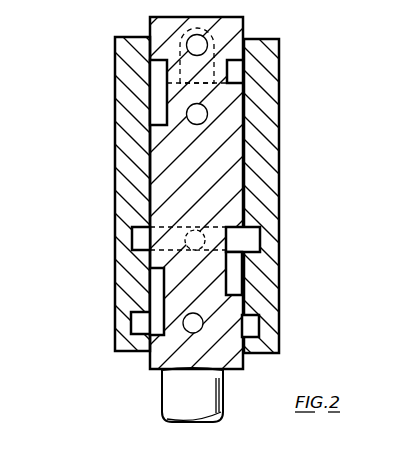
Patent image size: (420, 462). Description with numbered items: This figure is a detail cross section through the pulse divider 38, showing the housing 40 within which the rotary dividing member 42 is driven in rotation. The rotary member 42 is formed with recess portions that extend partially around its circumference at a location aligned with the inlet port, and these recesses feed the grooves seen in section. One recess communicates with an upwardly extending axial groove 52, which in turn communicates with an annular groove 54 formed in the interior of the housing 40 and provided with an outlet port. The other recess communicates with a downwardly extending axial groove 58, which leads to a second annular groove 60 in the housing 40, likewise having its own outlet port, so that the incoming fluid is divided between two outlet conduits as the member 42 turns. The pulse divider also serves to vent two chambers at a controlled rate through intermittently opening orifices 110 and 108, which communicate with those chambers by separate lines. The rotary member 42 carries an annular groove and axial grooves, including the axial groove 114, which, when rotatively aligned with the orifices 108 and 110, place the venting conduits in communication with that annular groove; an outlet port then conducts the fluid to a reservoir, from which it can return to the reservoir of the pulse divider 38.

The pulse divider 38 is at (88, 316).
The housing 40 is at (270, 192).
The rotary dividing member 42 is at (222, 152).
The axial groove 52 is at (235, 277).
The annular groove 54 is at (252, 241).
The slot 58 is at (157, 283).
The second annular groove 60 is at (250, 322).
The orifice 108 is at (205, 108).
The orifice 110 is at (210, 41).
The axial groove 114 is at (155, 97).